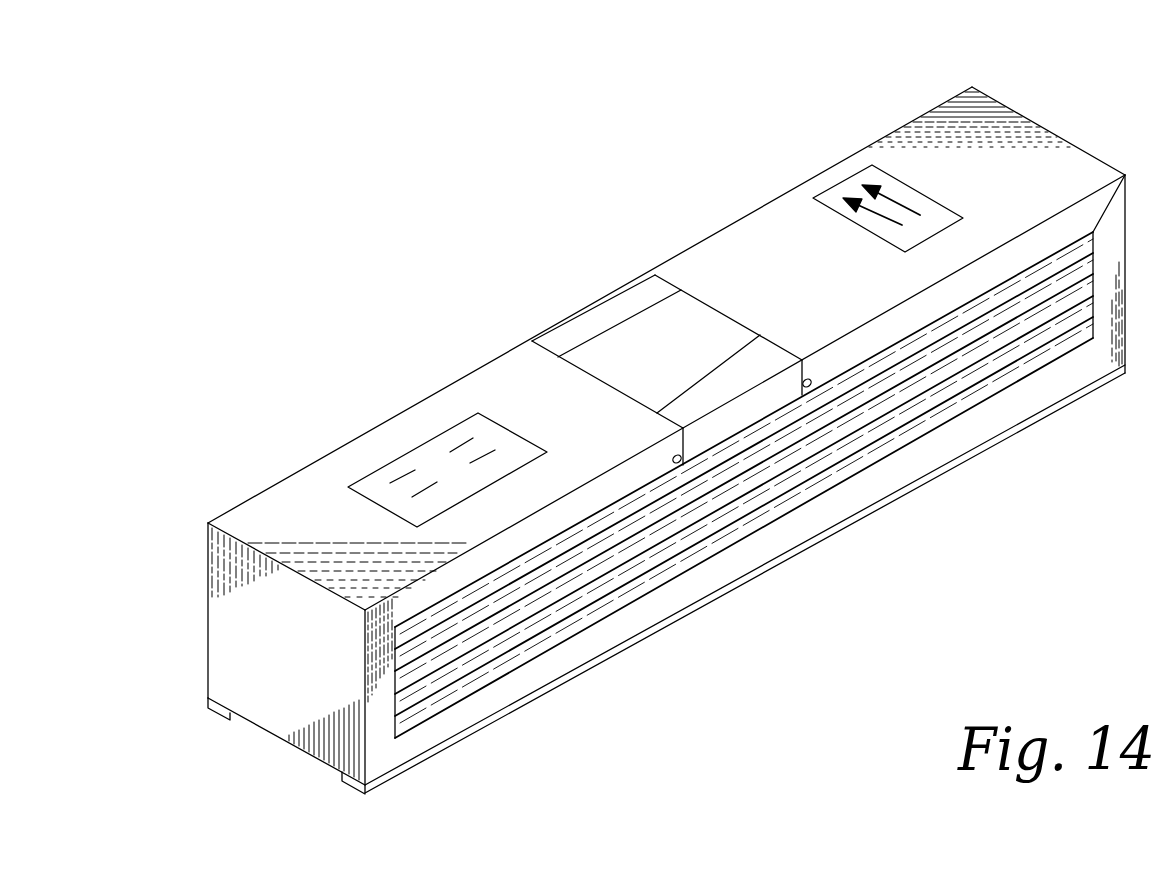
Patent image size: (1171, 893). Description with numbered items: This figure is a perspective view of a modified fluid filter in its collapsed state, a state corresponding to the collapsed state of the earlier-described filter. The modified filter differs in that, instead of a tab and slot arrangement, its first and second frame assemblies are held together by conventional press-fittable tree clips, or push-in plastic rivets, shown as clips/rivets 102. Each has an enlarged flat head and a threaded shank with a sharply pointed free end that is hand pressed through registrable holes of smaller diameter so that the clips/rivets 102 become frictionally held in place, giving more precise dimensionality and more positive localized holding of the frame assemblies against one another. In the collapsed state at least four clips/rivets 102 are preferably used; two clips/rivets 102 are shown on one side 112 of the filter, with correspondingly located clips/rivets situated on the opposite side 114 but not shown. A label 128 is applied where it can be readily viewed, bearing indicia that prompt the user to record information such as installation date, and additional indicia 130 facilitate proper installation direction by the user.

The clips/rivets 102 is at (677, 455).
The side 112 is at (931, 313).
The opposite side 114 is at (489, 349).
The label 128 is at (422, 443).
The indicia 130 is at (913, 188).